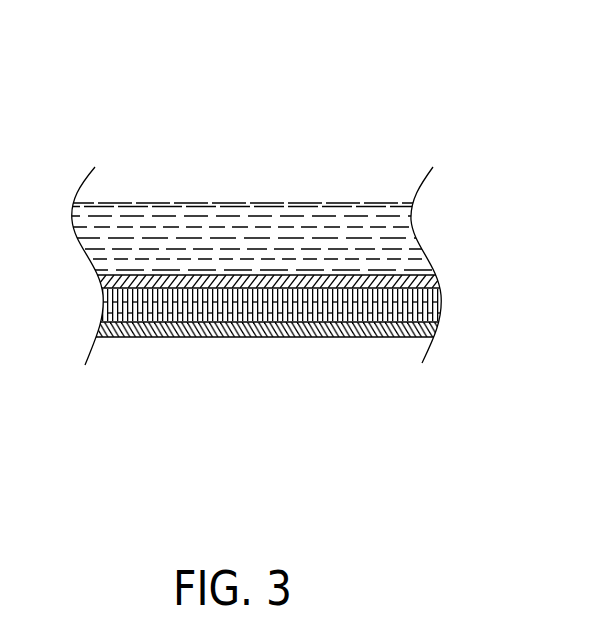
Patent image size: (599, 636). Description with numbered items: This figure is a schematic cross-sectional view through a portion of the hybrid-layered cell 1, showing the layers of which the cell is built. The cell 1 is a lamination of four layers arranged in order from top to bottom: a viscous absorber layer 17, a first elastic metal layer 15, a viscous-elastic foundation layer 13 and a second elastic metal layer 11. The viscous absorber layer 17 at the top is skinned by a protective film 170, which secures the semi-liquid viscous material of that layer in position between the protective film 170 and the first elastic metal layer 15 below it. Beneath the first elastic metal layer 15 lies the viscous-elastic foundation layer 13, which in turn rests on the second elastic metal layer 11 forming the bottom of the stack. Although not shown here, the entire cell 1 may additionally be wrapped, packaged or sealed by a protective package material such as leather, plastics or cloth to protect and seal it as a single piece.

The hybrid-layered cell 1 is at (95, 157).
The protective film 170 is at (332, 203).
The viscous absorber layer 17 is at (397, 240).
The first elastic metal layer 15 is at (437, 279).
The viscous-elastic foundation layer 13 is at (413, 307).
The second elastic metal layer 11 is at (437, 328).